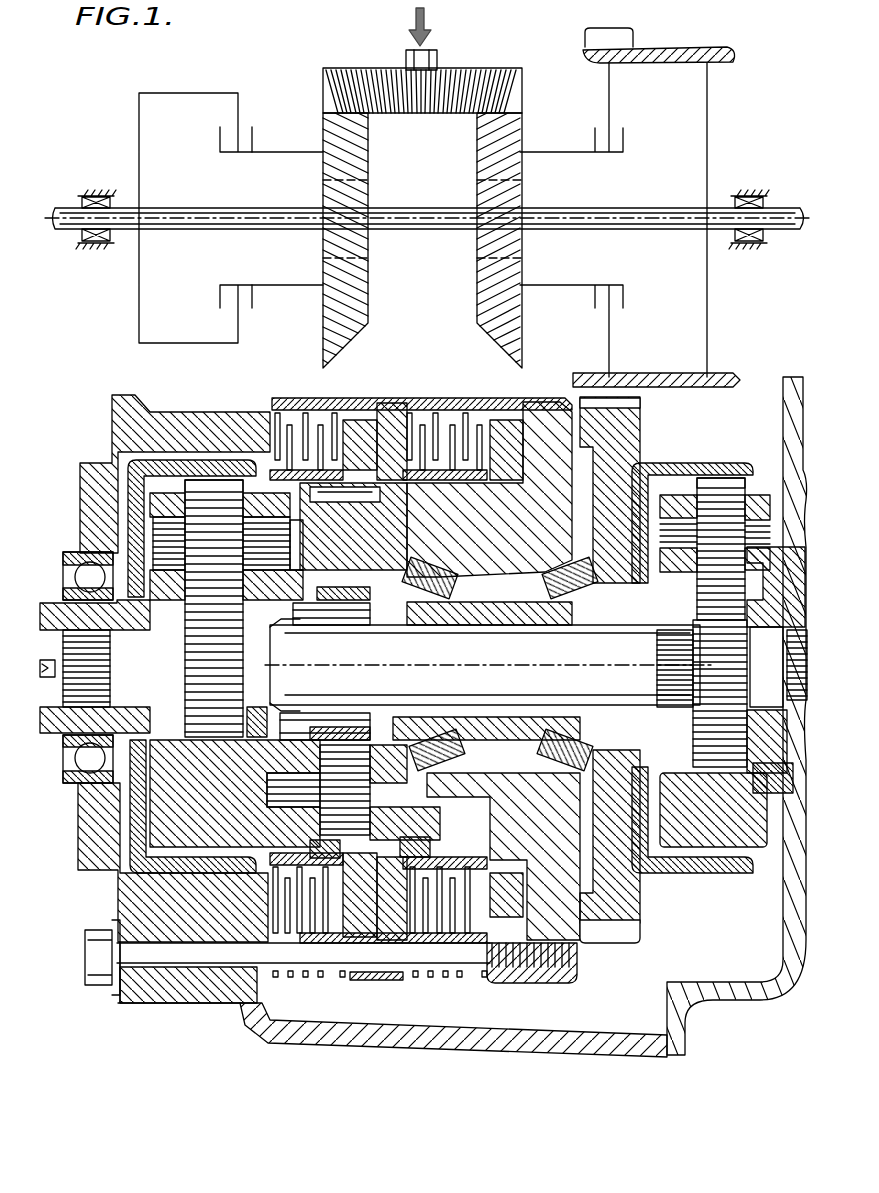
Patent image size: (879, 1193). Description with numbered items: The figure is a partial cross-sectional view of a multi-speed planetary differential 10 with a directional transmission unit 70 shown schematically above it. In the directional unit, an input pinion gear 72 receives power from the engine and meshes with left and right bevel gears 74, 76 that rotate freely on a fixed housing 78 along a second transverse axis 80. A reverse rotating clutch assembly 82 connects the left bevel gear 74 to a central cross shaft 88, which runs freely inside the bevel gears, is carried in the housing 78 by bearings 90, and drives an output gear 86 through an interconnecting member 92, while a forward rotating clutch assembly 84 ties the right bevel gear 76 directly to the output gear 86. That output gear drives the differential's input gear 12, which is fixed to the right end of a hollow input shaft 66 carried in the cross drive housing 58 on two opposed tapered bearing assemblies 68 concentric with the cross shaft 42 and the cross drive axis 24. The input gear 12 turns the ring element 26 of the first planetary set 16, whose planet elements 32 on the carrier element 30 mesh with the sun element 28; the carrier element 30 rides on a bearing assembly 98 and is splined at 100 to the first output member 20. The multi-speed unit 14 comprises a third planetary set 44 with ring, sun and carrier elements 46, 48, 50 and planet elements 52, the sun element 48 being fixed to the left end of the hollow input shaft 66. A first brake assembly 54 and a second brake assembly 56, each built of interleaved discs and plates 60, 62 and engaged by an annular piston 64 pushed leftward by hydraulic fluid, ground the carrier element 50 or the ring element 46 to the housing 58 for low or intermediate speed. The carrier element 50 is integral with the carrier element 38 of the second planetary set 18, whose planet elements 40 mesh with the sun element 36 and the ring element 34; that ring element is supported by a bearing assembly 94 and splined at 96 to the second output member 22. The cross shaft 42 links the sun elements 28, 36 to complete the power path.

The multi-speed planetary differential 10 is at (104, 388).
The input gear 12 is at (630, 428).
The multi-speed unit 14 is at (393, 392).
The first planetary set 16 is at (730, 462).
The second planetary set 18 is at (214, 450).
The first output member 20 is at (797, 650).
The second output member 22 is at (106, 688).
The cross drive axis 24 is at (280, 670).
The ring element 26 is at (690, 464).
The sun element 28 is at (690, 657).
The carrier element 30 is at (707, 834).
The planet elements 32 is at (700, 527).
The ring element 34 is at (188, 466).
The sun element 36 is at (194, 668).
The carrier element 38 is at (196, 784).
The planet elements 40 is at (240, 545).
The cross shaft 42 is at (607, 689).
The third planetary set 44 is at (350, 714).
The ring element 46 is at (340, 503).
The sun element 48 is at (343, 622).
The carrier element 50 is at (367, 569).
The planet elements 52 is at (312, 776).
The first brake assembly 54 is at (436, 398).
The second brake assembly 56 is at (262, 398).
The cross drive housing 58 is at (524, 539).
The discs 60 is at (272, 930).
The plates 62 is at (289, 979).
The annular piston 64 is at (360, 432).
The hollow input shaft 66 is at (548, 720).
The tapered bearing assemblies 68 is at (432, 606).
The directional transmission unit 70 is at (384, 204).
The input pinion gear 72 is at (440, 76).
The left bevel gear 74 is at (365, 172).
The right bevel gear 76 is at (480, 135).
The fixed housing 78 is at (102, 195).
The second transverse axis 80 is at (208, 215).
The reverse rotating clutch assembly 82 is at (252, 137).
The forward rotating clutch assembly 84 is at (596, 140).
The output gear 86 is at (632, 36).
The central cross shaft 88 is at (285, 207).
The bearings 90 is at (100, 246).
The interconnecting member 92 is at (708, 126).
The bearing assembly 94 is at (84, 568).
The spline 96 is at (122, 632).
The bearing assembly 98 is at (790, 766).
The spline 100 is at (753, 712).